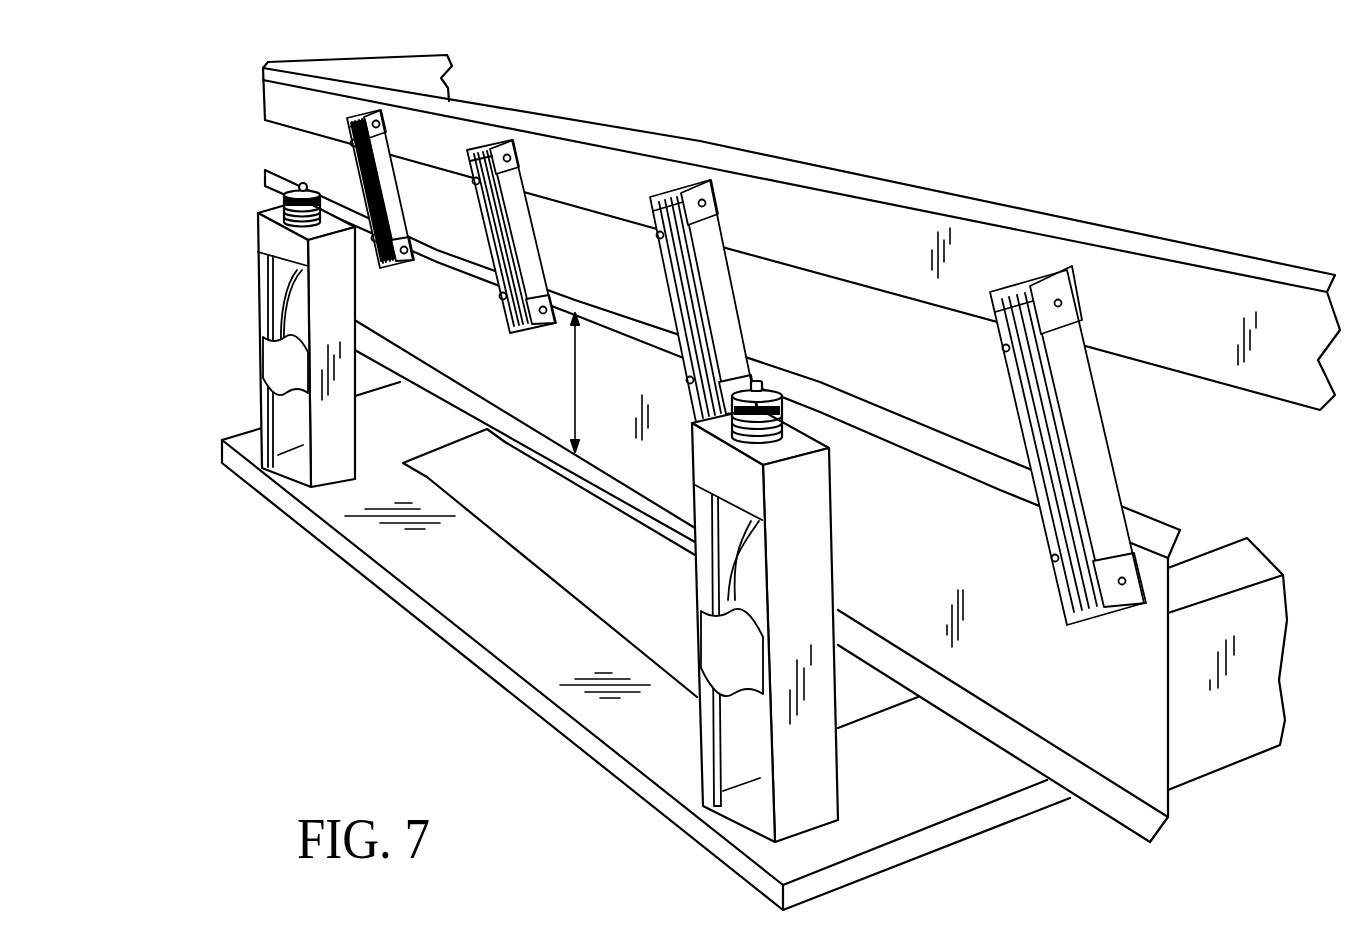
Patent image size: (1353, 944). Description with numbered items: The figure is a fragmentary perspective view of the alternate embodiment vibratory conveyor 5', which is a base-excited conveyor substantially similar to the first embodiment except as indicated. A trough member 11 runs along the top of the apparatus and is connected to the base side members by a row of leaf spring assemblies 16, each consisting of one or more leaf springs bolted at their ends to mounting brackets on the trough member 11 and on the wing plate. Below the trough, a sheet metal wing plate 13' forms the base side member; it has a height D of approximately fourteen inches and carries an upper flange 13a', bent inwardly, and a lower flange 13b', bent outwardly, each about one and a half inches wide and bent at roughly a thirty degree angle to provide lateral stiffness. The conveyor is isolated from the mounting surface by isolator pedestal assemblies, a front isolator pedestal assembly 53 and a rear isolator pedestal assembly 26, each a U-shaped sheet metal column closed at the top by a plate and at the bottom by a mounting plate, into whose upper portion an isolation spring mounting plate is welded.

The vibratory conveyor 5' is at (781, 482).
The trough member 11 is at (871, 245).
The leaf spring assemblies 16 is at (512, 180).
The wing plate 13' is at (776, 506).
The upper flange 13a' is at (722, 364).
The lower flange 13b' is at (1003, 743).
The rear isolator pedestal assembly 26 is at (342, 307).
The front isolator pedestal assembly 53 is at (818, 543).